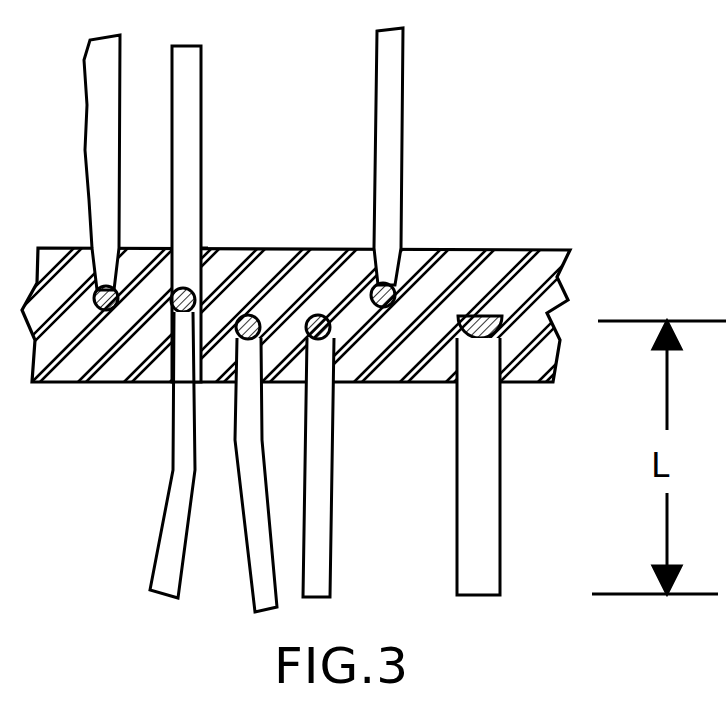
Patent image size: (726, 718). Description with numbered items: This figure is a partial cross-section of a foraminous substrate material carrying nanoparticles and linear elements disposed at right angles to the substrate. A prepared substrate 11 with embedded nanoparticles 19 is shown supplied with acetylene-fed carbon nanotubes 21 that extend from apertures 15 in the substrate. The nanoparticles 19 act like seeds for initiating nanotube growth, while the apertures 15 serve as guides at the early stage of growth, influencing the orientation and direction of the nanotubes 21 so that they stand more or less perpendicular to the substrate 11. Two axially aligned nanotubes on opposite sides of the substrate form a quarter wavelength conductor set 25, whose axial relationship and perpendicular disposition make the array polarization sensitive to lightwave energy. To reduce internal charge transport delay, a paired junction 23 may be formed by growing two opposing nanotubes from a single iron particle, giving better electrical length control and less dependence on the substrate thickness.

The prepared substrate 11 is at (518, 258).
The apertures 15 is at (252, 231).
The embedded nanoparticles 19 is at (499, 398).
The acetylene-fed carbon nanotubes 21 is at (396, 91).
The paired junction 23 is at (177, 393).
The quarter wavelength conductor set 25 is at (197, 187).